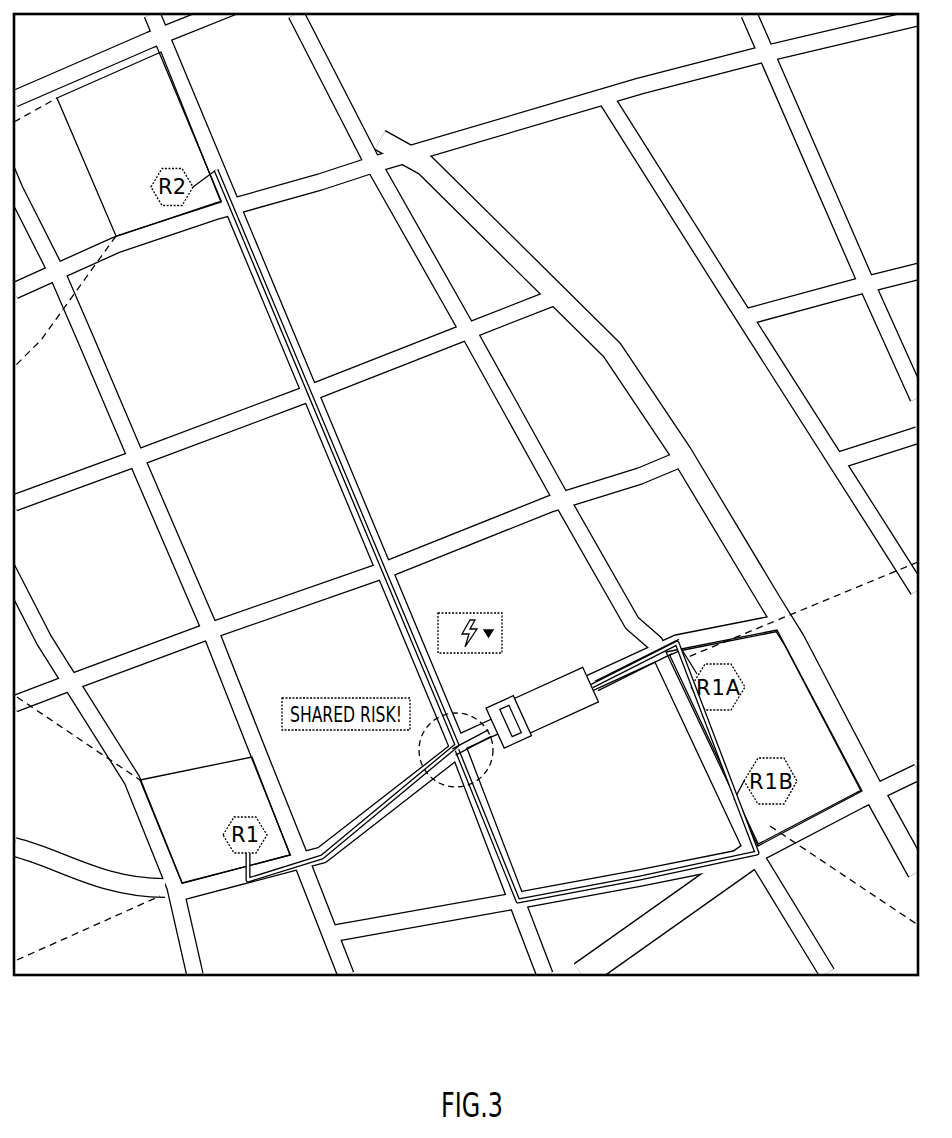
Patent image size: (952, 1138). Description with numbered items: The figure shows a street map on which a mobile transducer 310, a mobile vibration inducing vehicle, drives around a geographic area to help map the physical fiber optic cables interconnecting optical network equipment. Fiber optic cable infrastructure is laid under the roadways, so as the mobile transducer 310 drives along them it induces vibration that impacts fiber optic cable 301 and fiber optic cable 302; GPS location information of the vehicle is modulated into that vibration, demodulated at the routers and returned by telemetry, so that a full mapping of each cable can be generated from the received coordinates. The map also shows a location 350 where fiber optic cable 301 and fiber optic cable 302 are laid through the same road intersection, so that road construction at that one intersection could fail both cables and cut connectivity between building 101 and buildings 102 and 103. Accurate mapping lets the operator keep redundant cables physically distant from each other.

The building 101 is at (787, 727).
The building 102 is at (142, 137).
The building 103 is at (200, 818).
The fiber optic cable 301 is at (354, 500).
The fiber optic cable 302 is at (580, 893).
The mobile transducer 310 is at (573, 718).
The location 350 is at (458, 788).